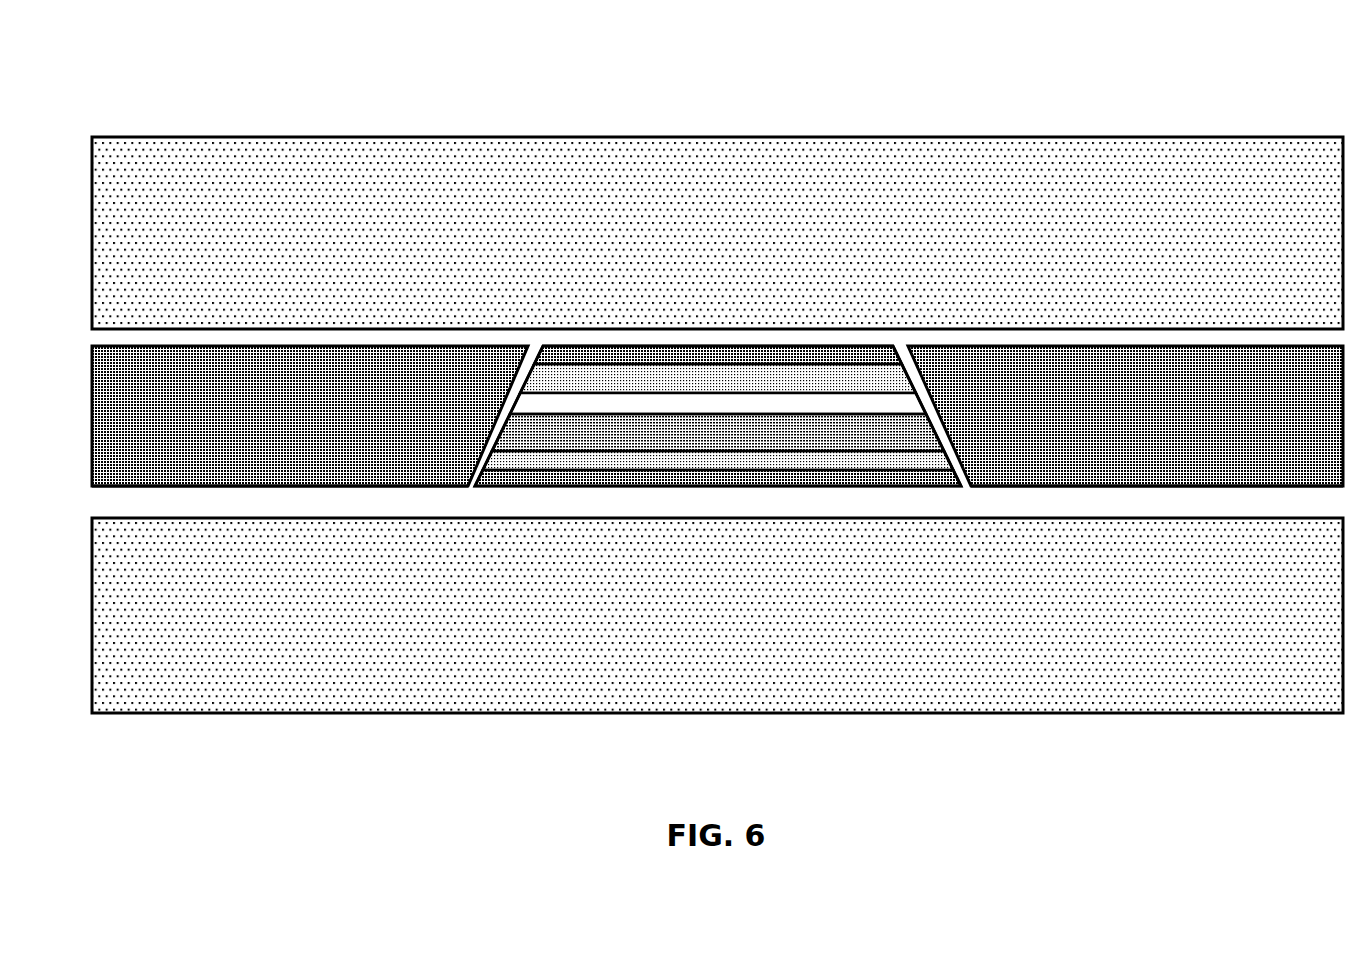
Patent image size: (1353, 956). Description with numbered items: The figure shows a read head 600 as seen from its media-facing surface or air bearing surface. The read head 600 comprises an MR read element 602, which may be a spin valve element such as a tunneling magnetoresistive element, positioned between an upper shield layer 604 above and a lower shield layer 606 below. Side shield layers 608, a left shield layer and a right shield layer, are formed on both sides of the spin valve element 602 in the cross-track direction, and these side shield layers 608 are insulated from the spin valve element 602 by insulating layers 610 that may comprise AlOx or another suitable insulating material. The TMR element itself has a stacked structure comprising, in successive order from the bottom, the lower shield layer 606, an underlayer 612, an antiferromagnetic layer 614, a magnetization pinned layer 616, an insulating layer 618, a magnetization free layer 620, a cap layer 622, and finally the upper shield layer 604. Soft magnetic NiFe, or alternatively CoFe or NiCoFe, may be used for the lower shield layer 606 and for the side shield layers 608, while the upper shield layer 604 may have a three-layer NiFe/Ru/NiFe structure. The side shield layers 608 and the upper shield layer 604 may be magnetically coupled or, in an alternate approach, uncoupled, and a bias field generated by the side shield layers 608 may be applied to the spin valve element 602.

The read head 600 is at (491, 66).
The MR read element 602 is at (718, 307).
The upper shield layer 604 is at (691, 246).
The lower shield layer 606 is at (691, 628).
The side shield layers 608 is at (274, 420).
The insulating layers 610 is at (274, 506).
The underlayer 612 is at (763, 462).
The antiferromagnetic layer 614 is at (840, 452).
The magnetization pinned layer 616 is at (697, 425).
The insulating layer 618 is at (633, 397).
The magnetization free layer 620 is at (647, 372).
The cap layer 622 is at (816, 345).